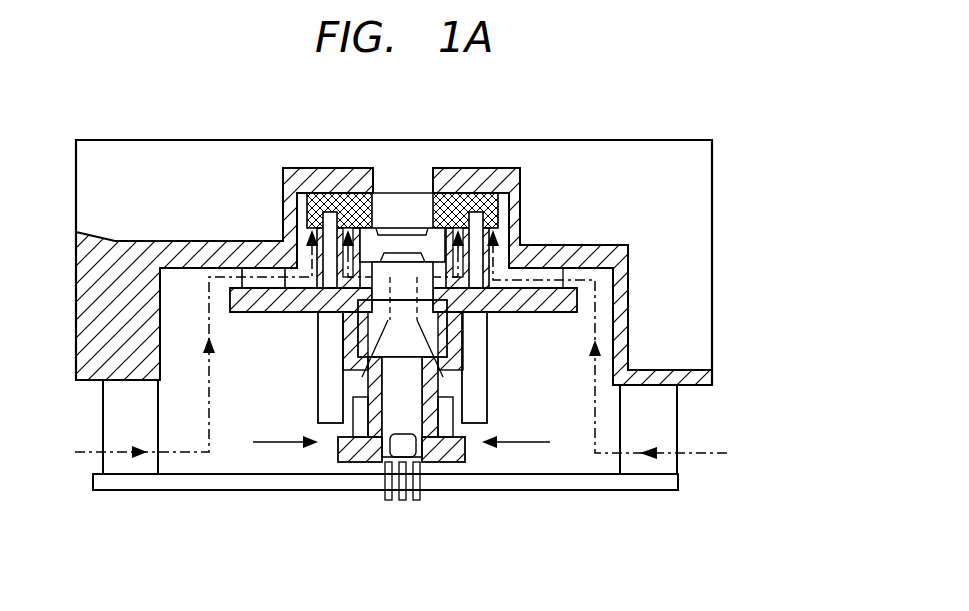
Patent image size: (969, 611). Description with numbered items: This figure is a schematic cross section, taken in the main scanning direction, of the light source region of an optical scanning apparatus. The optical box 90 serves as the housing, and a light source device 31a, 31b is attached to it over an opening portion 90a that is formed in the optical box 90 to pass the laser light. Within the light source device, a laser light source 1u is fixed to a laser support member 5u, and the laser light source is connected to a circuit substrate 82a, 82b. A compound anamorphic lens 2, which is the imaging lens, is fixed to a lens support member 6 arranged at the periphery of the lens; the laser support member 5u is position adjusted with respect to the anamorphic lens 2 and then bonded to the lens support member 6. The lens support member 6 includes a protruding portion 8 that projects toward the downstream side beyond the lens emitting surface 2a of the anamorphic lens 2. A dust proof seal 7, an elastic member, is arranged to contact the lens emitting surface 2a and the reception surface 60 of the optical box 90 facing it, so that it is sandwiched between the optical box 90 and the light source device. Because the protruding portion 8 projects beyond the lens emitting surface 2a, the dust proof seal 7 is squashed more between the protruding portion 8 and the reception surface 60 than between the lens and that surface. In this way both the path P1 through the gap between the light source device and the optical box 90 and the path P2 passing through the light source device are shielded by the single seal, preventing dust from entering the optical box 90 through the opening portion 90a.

The optical box 90 is at (235, 268).
The opening portion 90a is at (423, 180).
The dust proof seal 7 is at (327, 192).
The reception surface 60 is at (487, 192).
The compound anamorphic lens 2 is at (400, 237).
The lens emitting surface 2a is at (422, 252).
The protruding portion 8 is at (478, 220).
The lens support member 6 is at (545, 302).
The light source device 31a is at (330, 338).
The light source device 31b is at (361, 367).
The laser support member 5u is at (355, 437).
The laser light source 1u is at (463, 430).
The circuit substrate 82a is at (140, 490).
The circuit substrate 82b is at (386, 484).
The path P1 is at (205, 455).
The path P2 is at (283, 445).